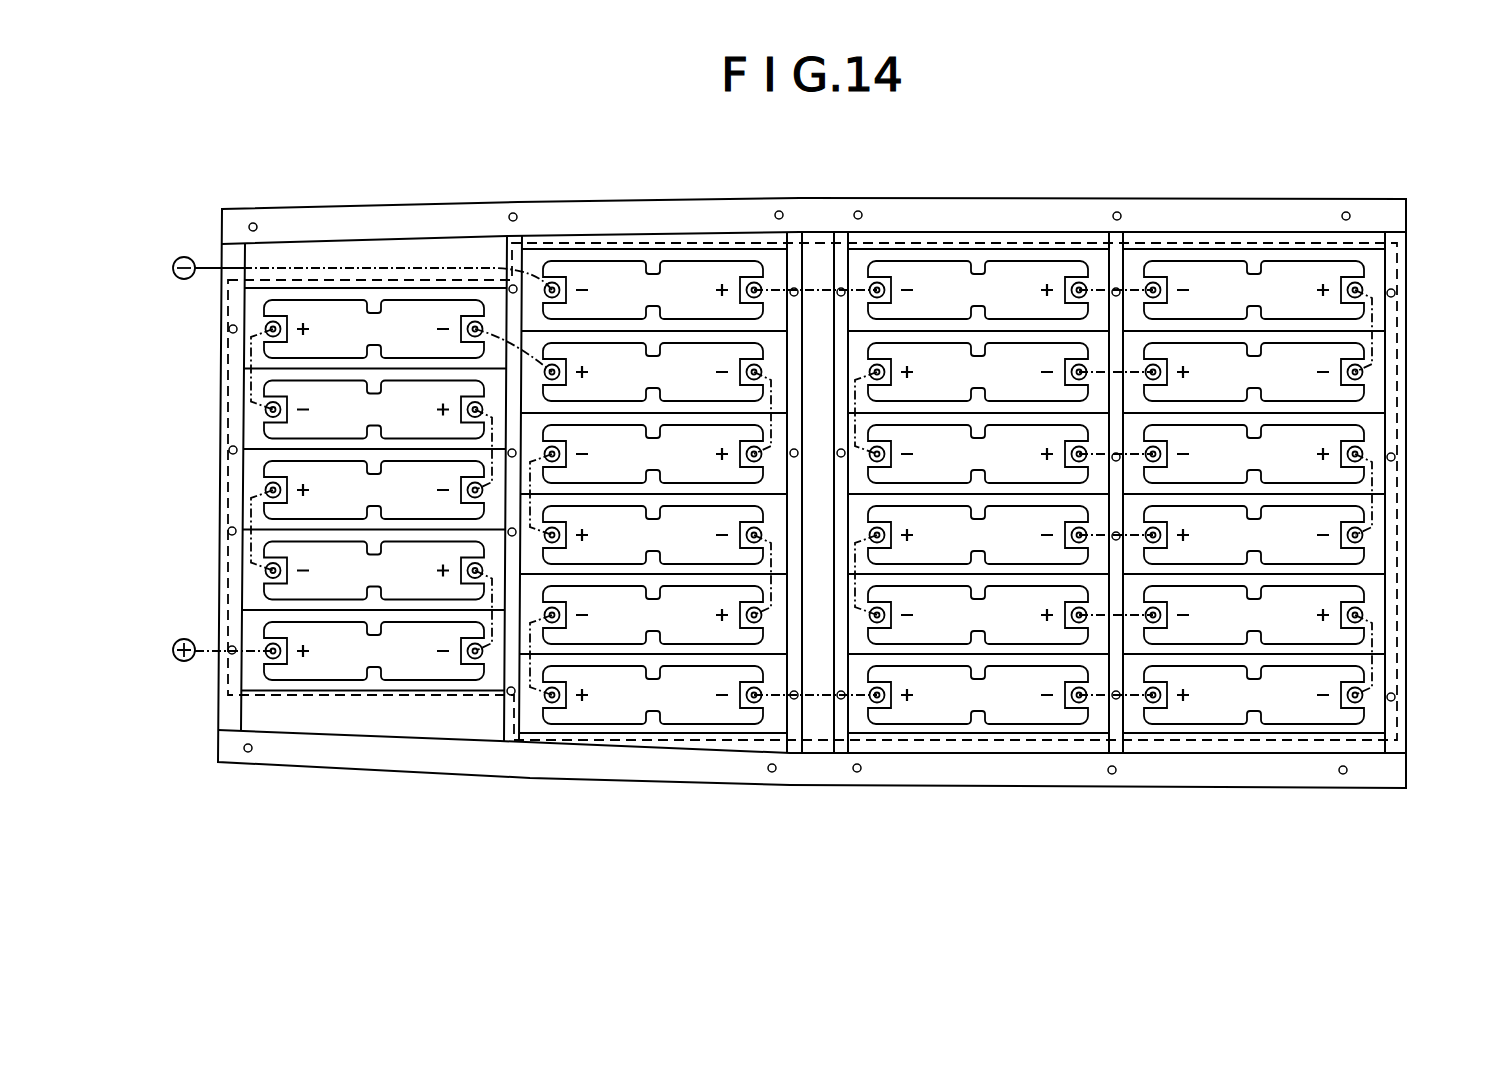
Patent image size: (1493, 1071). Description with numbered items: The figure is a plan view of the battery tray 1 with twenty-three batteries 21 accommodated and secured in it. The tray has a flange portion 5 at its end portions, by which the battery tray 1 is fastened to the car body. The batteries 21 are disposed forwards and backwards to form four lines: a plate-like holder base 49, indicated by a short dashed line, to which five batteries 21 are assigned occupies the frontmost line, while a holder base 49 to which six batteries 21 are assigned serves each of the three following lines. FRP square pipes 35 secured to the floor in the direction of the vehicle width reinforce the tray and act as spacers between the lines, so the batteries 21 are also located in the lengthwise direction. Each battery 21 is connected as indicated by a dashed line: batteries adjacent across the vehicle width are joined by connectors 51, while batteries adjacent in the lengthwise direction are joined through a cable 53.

The battery tray 1 is at (802, 772).
The flange portion 5 is at (425, 215).
The battery 21 is at (938, 708).
The FRP square pipe 35 is at (226, 711).
The holder base 49 is at (1262, 243).
The connector 51 is at (1373, 489).
The cable 53 is at (1098, 290).